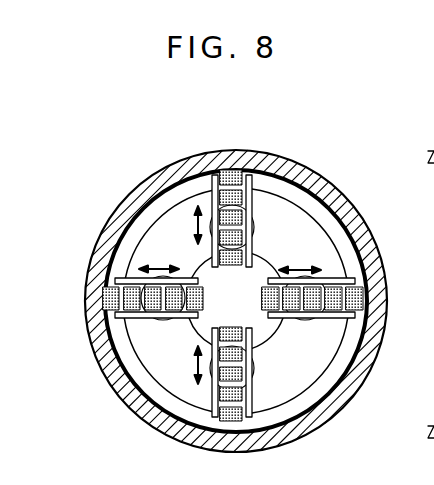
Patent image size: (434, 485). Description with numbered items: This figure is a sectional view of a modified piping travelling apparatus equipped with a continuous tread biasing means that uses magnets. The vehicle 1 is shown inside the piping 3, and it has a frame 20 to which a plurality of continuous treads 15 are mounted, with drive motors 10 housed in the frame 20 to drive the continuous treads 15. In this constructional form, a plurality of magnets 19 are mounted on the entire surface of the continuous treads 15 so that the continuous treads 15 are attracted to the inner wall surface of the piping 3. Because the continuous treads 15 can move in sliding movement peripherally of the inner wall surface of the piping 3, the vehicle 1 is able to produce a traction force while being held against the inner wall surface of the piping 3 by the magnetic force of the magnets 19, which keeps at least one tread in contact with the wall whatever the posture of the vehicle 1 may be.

The vehicle 1 is at (192, 192).
The piping 3 is at (155, 185).
The drive motor 10 is at (310, 320).
The continuous tread 15 is at (256, 188).
The magnet 19 is at (243, 168).
The frame 20 is at (157, 255).